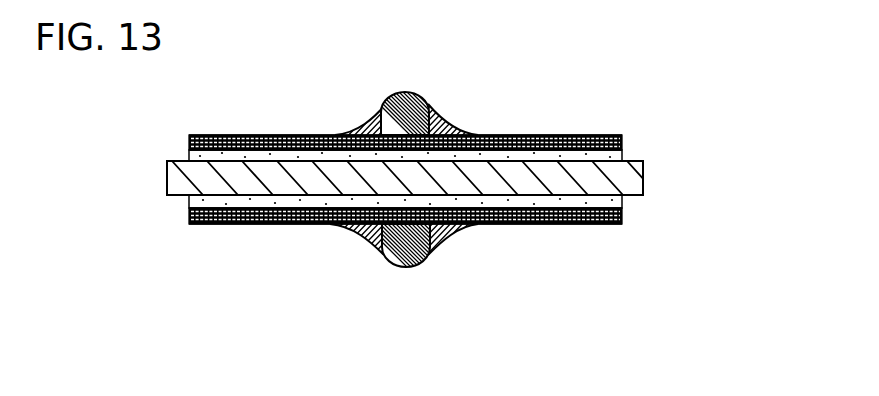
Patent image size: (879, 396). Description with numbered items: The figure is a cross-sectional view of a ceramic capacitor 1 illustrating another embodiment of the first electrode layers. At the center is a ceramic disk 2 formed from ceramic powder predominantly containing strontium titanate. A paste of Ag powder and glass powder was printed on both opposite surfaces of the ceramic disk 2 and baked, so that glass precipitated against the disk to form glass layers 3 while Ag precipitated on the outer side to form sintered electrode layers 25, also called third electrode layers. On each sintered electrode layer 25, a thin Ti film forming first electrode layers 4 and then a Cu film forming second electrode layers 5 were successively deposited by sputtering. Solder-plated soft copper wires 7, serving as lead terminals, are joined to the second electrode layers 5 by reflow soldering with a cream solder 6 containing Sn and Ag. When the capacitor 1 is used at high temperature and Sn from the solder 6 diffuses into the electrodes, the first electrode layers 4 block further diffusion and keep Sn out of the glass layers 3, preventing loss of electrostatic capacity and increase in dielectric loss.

The ceramic capacitor 1 is at (290, 122).
The ceramic disk 2 is at (647, 190).
The glass layers 3 is at (623, 155).
The first electrode layers 4 is at (623, 143).
The second electrode layers 5 is at (583, 135).
The cream solder 6 is at (447, 110).
The soft copper wires 7 is at (403, 93).
The sintered electrode layers 25 is at (623, 148).